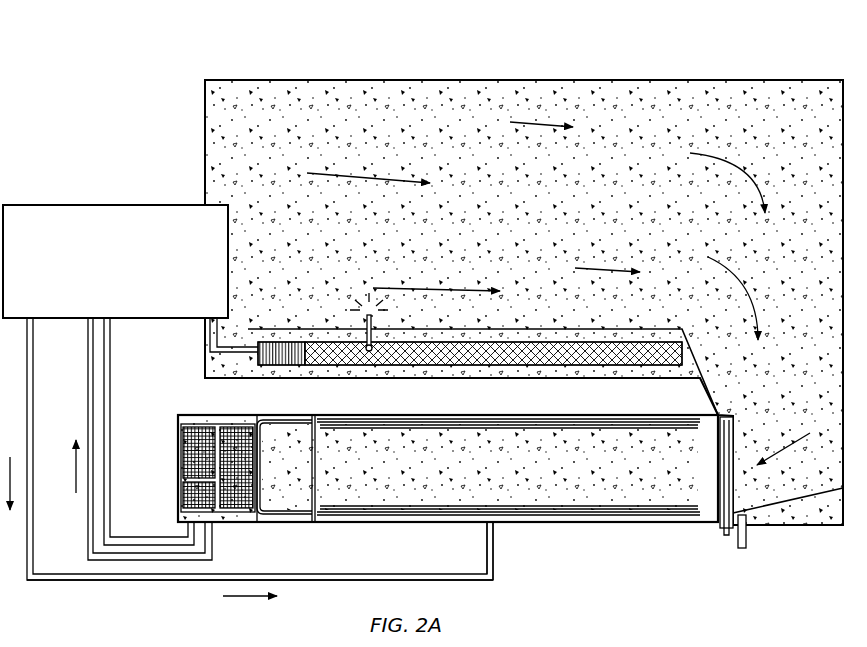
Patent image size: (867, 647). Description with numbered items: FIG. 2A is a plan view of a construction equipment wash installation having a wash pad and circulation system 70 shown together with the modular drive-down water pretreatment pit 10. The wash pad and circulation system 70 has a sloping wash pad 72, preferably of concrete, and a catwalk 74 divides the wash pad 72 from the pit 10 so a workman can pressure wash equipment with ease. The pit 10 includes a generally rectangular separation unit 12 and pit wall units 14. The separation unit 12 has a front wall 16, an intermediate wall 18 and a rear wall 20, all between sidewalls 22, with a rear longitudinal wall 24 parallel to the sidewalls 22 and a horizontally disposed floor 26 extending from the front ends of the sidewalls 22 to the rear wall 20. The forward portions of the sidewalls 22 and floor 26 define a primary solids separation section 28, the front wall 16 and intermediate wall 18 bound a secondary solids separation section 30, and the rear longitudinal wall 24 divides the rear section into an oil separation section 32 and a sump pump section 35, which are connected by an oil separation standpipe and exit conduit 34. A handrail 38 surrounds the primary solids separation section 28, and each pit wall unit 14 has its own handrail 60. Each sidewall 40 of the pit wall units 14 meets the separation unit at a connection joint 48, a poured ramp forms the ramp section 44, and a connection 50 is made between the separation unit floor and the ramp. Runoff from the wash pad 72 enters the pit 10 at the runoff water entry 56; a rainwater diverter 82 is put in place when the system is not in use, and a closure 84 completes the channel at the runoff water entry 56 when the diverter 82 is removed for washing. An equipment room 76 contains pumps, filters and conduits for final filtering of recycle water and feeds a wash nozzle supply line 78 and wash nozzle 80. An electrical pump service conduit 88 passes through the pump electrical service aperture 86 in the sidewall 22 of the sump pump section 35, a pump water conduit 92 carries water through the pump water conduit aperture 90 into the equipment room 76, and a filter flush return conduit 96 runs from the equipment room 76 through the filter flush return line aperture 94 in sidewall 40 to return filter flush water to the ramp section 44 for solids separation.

The modular drive-down pit system 10 is at (397, 528).
The separation unit 12 is at (245, 532).
The pit wall units 14 is at (565, 530).
The front wall 16 is at (255, 430).
The intermediate wall 18 is at (222, 420).
The rear wall 20 is at (177, 435).
The sidewalls 22 is at (192, 418).
The rear longitudinal wall 24 is at (203, 483).
The floor 26 is at (302, 478).
The primary solids separation section 28 is at (313, 413).
The secondary solids separation section 30 is at (253, 465).
The oil separation section 32 is at (182, 452).
The oil separation standpipe and exit conduit 34 is at (182, 480).
The sump pump section 35 is at (253, 466).
The handrail 38 is at (288, 417).
The sidewall 40 is at (515, 420).
The ramp section 44 is at (387, 435).
The connection joint 48 is at (338, 413).
The connection 50 is at (315, 465).
The runoff water entry 56 is at (720, 495).
The handrail 60 is at (447, 419).
The wash pad and circulation system 70 is at (360, 65).
The wash pad 72 is at (570, 93).
The catwalk 74 is at (650, 362).
The equipment room 76 is at (103, 254).
The wash nozzle supply line 78 is at (215, 340).
The wash nozzle 80 is at (362, 323).
The rainwater diverter 82 is at (733, 505).
The closure 84 is at (740, 547).
The pump electrical service aperture 86 is at (182, 513).
The electrical pump service conduit 88 is at (110, 333).
The pump water conduit aperture 90 is at (217, 522).
The pump water conduit 92 is at (88, 413).
The filter flush return line aperture 94 is at (497, 518).
The filter flush return conduit 96 is at (127, 580).